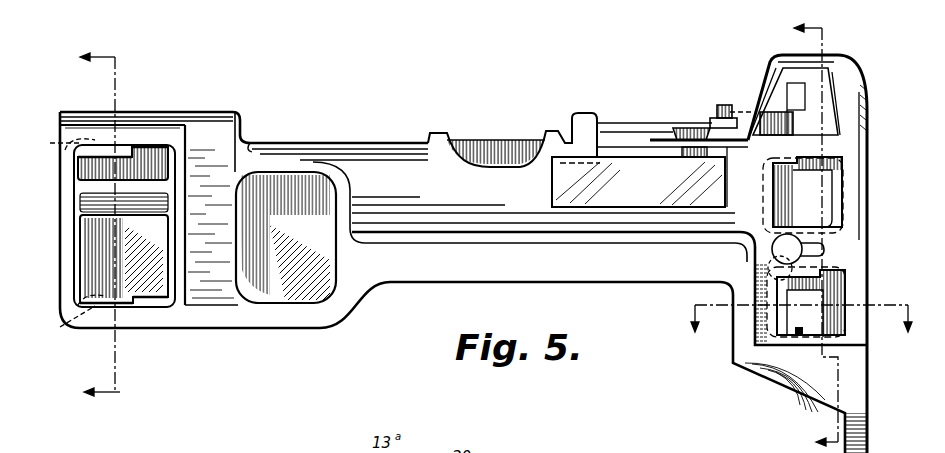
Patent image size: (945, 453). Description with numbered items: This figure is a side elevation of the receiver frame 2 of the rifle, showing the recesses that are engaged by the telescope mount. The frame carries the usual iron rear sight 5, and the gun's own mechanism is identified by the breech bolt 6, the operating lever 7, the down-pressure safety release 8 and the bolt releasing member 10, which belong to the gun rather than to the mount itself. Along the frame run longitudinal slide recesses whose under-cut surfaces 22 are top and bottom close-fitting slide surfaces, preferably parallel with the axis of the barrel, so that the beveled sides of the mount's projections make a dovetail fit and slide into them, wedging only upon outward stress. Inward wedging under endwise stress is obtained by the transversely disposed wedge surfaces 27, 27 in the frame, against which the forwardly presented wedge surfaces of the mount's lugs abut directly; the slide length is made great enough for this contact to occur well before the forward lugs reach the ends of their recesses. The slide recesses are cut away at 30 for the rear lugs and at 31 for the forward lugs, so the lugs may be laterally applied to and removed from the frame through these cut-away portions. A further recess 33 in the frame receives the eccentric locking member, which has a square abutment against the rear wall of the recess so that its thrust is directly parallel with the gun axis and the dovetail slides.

The receiver frame 2 is at (215, 135).
The rear sight 5 is at (750, 82).
The bolt releasing member 10 is at (639, 177).
The under-cut surface 22 is at (752, 347).
The transversely disposed wedge surface 27 is at (763, 196).
The cut away portion for rear lugs 30 is at (833, 168).
The cut away portion for forward lugs 31 is at (138, 147).
The recess 33 is at (286, 237).
The breech bolt 6 is at (806, 234).
The operating lever 7 is at (806, 330).
The down-pressure safety release 8 is at (87, 225).